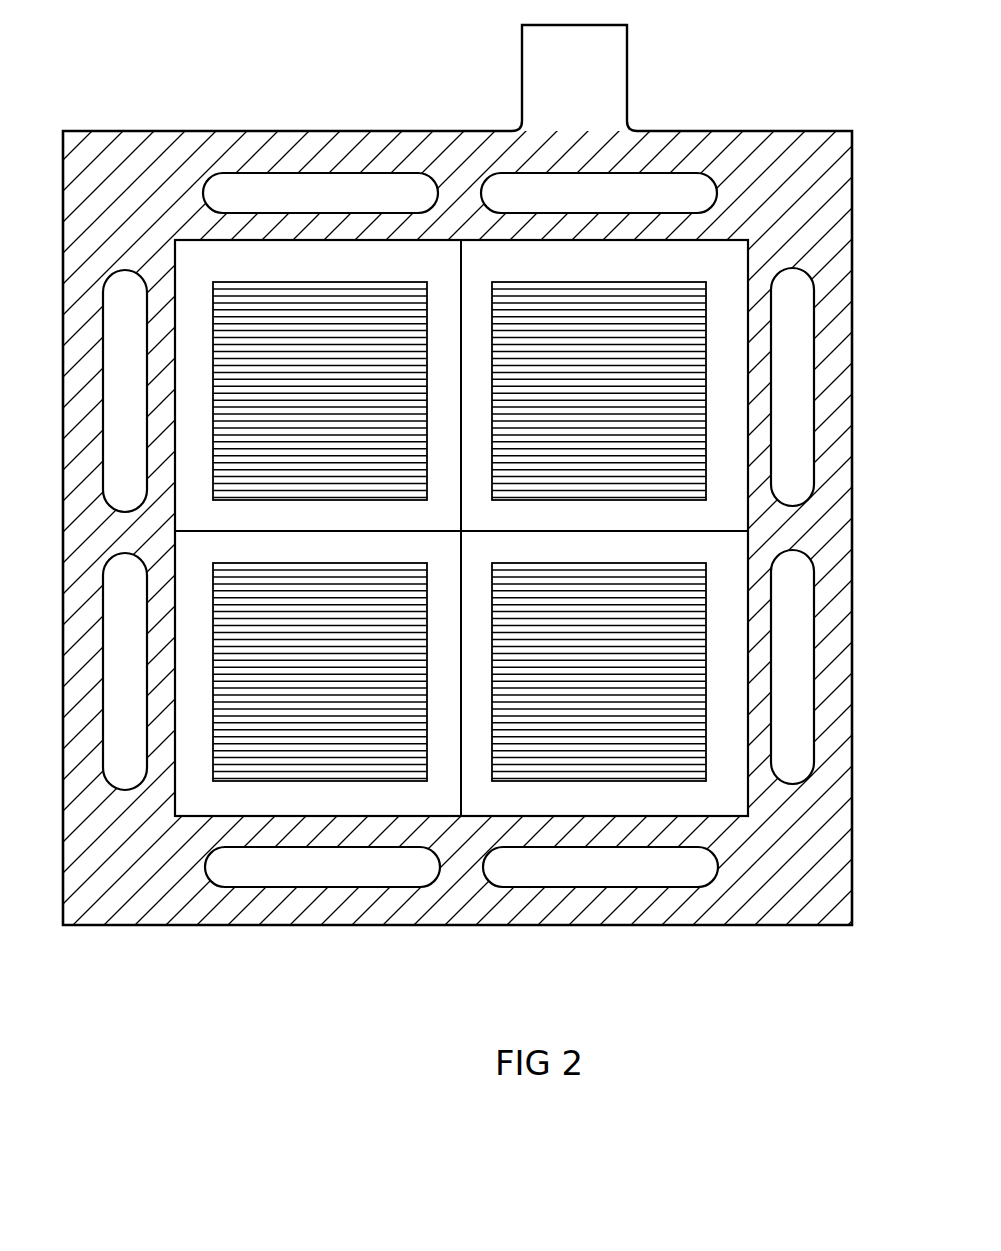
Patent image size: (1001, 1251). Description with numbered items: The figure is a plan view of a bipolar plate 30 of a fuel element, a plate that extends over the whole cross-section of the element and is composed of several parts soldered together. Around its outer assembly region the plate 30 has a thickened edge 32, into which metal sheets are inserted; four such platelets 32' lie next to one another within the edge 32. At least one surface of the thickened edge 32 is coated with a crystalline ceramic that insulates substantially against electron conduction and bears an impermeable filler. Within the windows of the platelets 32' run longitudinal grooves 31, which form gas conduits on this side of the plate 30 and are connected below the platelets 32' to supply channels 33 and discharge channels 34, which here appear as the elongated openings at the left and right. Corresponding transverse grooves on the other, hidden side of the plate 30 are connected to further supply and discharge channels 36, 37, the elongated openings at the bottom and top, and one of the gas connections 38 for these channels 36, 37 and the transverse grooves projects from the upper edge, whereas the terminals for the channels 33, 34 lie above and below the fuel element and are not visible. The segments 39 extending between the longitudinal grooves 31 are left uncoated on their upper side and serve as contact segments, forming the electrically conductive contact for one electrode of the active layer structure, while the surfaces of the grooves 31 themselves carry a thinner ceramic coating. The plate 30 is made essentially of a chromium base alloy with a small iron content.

The bipolar plate 30 is at (483, 514).
The longitudinal grooves 31 is at (459, 642).
The thickened edge 32 is at (457, 567).
The platelets 32' is at (539, 605).
The supply channels 33 is at (122, 303).
The discharge channels 34 is at (793, 383).
The supply channels 36 is at (672, 867).
The discharge channels 37 is at (270, 190).
The gas connection 38 is at (541, 70).
The contact segments 39 is at (273, 762).